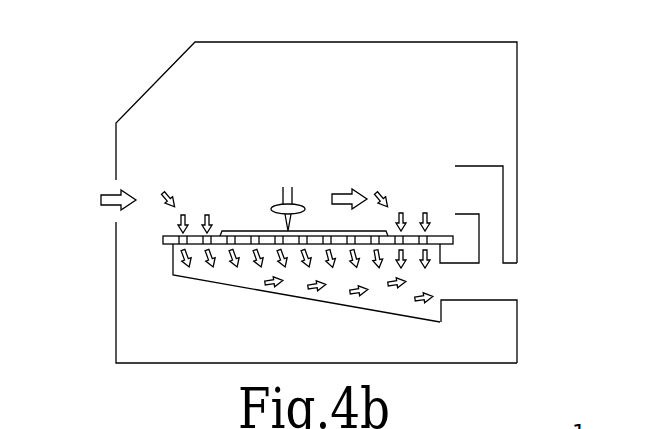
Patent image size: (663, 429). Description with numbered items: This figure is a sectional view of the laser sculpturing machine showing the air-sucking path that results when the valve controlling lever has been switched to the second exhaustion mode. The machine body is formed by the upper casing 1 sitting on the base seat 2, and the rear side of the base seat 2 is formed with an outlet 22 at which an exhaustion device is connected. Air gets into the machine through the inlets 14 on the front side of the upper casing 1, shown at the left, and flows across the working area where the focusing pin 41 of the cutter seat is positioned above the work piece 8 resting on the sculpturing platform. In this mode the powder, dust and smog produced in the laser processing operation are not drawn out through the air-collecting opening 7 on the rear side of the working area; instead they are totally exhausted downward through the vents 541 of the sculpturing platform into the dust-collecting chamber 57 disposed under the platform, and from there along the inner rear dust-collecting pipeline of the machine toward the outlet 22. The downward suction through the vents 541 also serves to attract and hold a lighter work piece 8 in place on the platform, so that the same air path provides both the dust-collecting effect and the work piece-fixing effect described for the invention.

The upper casing 1 is at (460, 42).
The base seat 2 is at (518, 333).
The air-collecting opening 7 is at (478, 182).
The work piece 8 is at (312, 232).
The inlets 14 is at (113, 181).
The outlet 22 is at (510, 270).
The focusing pin 41 is at (276, 220).
The vents 541 is at (181, 243).
The dust-collecting chamber 57 is at (263, 290).